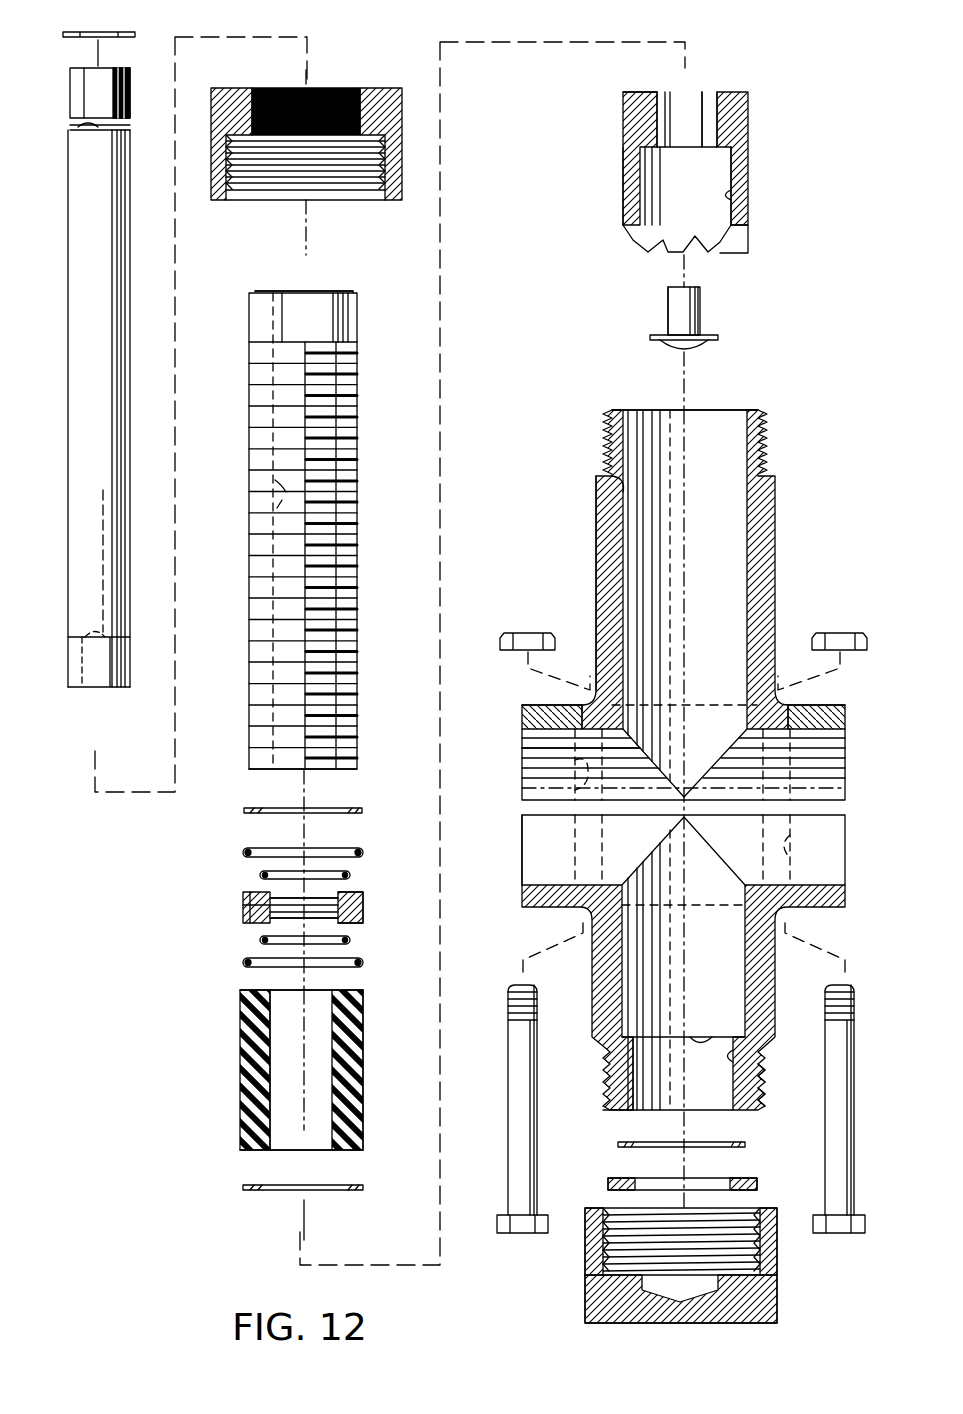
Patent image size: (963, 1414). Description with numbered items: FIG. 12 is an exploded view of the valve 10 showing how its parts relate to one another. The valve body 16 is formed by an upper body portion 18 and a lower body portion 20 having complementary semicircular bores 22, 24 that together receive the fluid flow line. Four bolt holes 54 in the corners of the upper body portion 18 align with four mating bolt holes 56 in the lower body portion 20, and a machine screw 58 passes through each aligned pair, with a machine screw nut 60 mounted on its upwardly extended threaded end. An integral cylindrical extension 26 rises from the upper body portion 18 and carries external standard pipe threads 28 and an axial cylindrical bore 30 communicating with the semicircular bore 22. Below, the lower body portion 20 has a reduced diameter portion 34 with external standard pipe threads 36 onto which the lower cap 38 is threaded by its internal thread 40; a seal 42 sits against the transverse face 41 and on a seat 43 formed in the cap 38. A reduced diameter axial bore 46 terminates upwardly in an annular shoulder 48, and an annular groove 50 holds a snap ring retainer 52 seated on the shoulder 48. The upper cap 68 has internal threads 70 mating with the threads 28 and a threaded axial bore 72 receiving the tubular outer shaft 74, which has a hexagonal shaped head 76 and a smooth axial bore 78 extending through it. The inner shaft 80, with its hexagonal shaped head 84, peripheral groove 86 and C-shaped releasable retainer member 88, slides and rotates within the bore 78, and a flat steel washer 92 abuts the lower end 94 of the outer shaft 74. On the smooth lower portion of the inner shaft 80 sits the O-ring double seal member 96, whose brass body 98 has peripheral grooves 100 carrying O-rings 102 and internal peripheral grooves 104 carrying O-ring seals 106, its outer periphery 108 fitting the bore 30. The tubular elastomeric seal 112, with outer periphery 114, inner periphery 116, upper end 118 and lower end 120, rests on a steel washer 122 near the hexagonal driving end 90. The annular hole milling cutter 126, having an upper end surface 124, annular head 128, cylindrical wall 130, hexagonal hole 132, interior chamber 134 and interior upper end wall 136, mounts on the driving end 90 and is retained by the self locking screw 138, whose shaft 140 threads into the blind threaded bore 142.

The valve 10 is at (802, 552).
The body 16 is at (535, 708).
The upper body portion 18 is at (522, 718).
The lower body portion 20 is at (522, 898).
The semicircular bore 22 is at (555, 745).
The semicircular bore 24 is at (540, 885).
The cylindrical extension 26 is at (596, 532).
The external standard pipe threads 28 is at (768, 442).
The axial cylindrical bore 30 is at (612, 480).
The reduced diameter portion 34 is at (764, 1078).
The external standard pipe threads 36 is at (762, 1097).
The lower cap 38 is at (790, 1302).
The internal thread 40 is at (612, 1218).
The transverse face 41 is at (618, 1115).
The seal 42 is at (742, 1180).
The seat 43 is at (610, 1268).
The reduced diameter axial bore 46 is at (745, 1055).
The annular shoulder 48 is at (630, 1040).
The annular groove 50 is at (703, 1040).
The snap ring retainer 52 is at (625, 1145).
The bolt holes 54 is at (560, 790).
The bolt holes 56 is at (572, 826).
The machine screw 58 is at (520, 1235).
The machine screw nut 60 is at (524, 632).
The upper cap 68 is at (390, 92).
The internal threads 70 is at (378, 180).
The threaded axial bore 72 is at (348, 88).
The outer shaft 74 is at (246, 450).
The hexagonal shaped head 76 is at (258, 294).
The axial bore 78 is at (268, 520).
The inner shaft 80 is at (66, 240).
The hexagonal shaped head 84 is at (74, 94).
The peripheral groove 86 is at (73, 130).
The C-shaped releasable retainer member 88 is at (135, 34).
The driving end 90 is at (74, 672).
The flat steel washer 92 is at (256, 808).
The lower end 94 is at (330, 770).
The O-ring double seal member 96 is at (235, 905).
The brass body 98 is at (256, 918).
The peripheral grooves 100 is at (362, 912).
The O-ring 102 is at (250, 850).
The internal peripheral grooves 104 is at (342, 899).
The O-ring seal 106 is at (348, 874).
The outer periphery 108 is at (255, 893).
The tubular elastomeric seal 112 is at (236, 1085).
The outer periphery 114 is at (360, 1045).
The inner periphery 116 is at (272, 1125).
The upper end 118 is at (258, 992).
The lower end 120 is at (345, 1150).
The steel washer 122 is at (265, 1191).
The upper end surface 124 is at (648, 95).
The annular hole milling cutter 126 is at (615, 153).
The annular head 128 is at (635, 125).
The cylindrical wall 130 is at (625, 195).
The axially disposed hole 132 is at (708, 100).
The cylindrical interior chamber 134 is at (735, 193).
The interior upper end wall 136 is at (735, 160).
The self locking screw 138 is at (725, 357).
The self locking screw shaft 140 is at (672, 308).
The blind threaded bore 142 is at (90, 690).